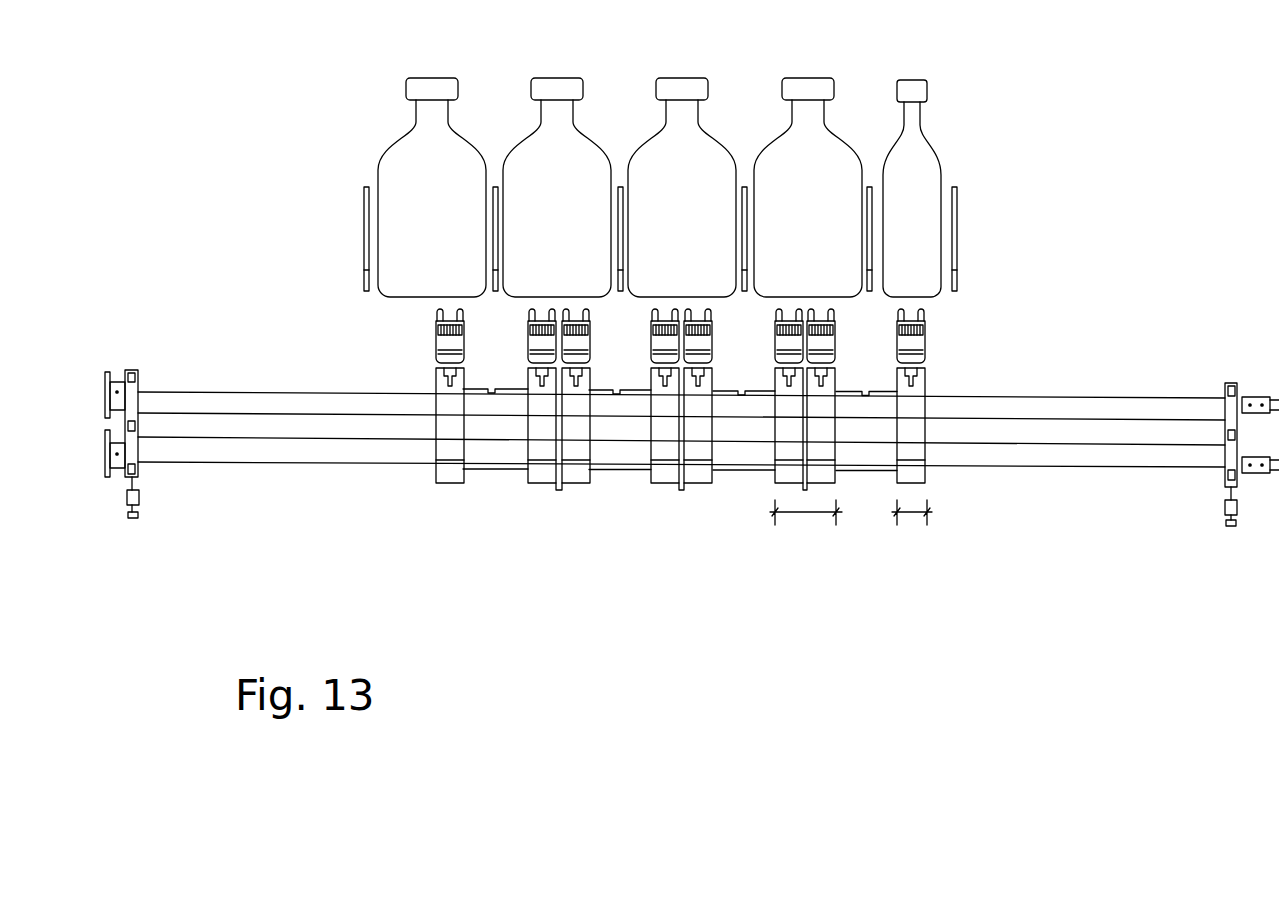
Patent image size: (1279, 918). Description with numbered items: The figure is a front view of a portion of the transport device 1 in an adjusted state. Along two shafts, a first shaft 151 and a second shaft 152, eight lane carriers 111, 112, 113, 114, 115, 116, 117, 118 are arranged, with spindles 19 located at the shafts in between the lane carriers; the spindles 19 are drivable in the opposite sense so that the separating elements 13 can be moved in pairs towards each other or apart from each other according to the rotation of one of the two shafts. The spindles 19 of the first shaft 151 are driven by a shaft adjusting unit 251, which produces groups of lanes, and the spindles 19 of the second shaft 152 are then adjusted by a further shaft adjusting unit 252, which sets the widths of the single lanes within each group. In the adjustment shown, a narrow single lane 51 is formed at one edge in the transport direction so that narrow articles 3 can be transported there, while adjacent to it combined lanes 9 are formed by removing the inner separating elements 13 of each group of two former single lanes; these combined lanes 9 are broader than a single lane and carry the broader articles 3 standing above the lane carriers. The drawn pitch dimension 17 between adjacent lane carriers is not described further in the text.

The transport device 1 is at (1088, 148).
The article 3 is at (922, 85).
The single lane 51 is at (950, 190).
The combined lane 9 is at (864, 195).
The separating element 13 is at (364, 200).
The lane carrier 111 is at (913, 536).
The lane carrier 112 is at (827, 536).
The lane carrier 113 is at (788, 536).
The lane carrier 114 is at (698, 396).
The lane carrier 115 is at (665, 396).
The lane carrier 116 is at (578, 500).
The lane carrier 117 is at (520, 495).
The lane carrier 118 is at (446, 495).
The first shaft 151 is at (1173, 405).
The second shaft 152 is at (1100, 460).
The pitch spacing 17 is at (1017, 505).
The spindle 19 is at (553, 483).
The shaft adjusting unit 251 is at (107, 395).
The shaft adjusting unit 252 is at (107, 458).